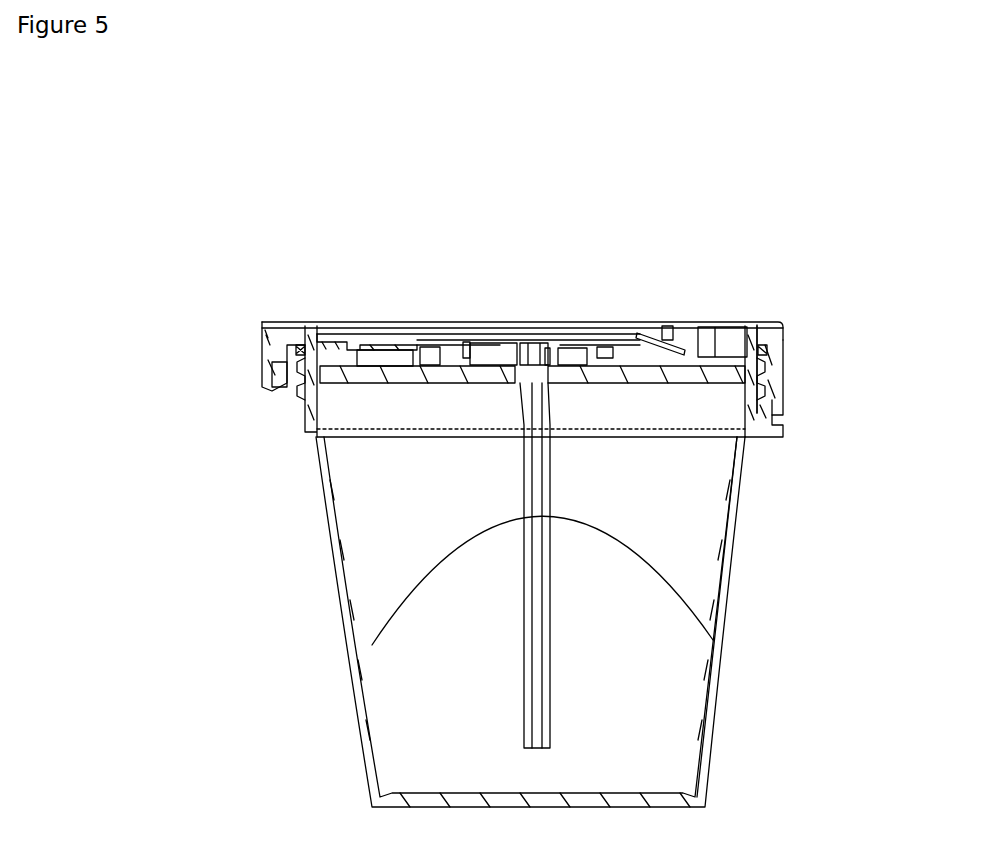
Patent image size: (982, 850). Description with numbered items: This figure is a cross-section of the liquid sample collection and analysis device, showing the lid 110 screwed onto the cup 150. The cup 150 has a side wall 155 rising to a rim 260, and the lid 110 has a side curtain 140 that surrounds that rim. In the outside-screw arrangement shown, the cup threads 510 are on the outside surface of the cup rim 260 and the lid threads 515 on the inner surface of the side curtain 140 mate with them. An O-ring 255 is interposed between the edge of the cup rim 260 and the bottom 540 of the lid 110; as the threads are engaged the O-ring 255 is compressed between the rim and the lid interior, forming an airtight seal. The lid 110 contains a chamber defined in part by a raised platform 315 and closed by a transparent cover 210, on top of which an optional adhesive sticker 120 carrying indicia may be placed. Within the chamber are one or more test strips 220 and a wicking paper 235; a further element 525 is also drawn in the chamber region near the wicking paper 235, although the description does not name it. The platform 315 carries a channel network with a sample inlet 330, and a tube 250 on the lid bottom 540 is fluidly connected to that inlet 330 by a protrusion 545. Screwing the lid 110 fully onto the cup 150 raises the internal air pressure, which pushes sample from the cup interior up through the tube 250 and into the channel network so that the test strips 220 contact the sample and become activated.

The lid 110 is at (755, 322).
The adhesive sticker 120 is at (458, 330).
The side curtain 140 is at (783, 340).
The cup 150 is at (683, 652).
The side wall 155 is at (728, 610).
The transparent cover 210 is at (385, 325).
The test strips 220 is at (512, 328).
The wicking paper 235 is at (683, 350).
The tube 250 is at (642, 590).
The O-ring 255 is at (308, 335).
The rim 260 is at (303, 368).
The raised platform 315 is at (471, 335).
The sample inlet 330 is at (540, 338).
The cup threads 510 is at (770, 385).
The lid threads 515 is at (772, 375).
The hinge 525 is at (668, 333).
The bottom 540 is at (437, 350).
The protrusion 545 is at (533, 385).